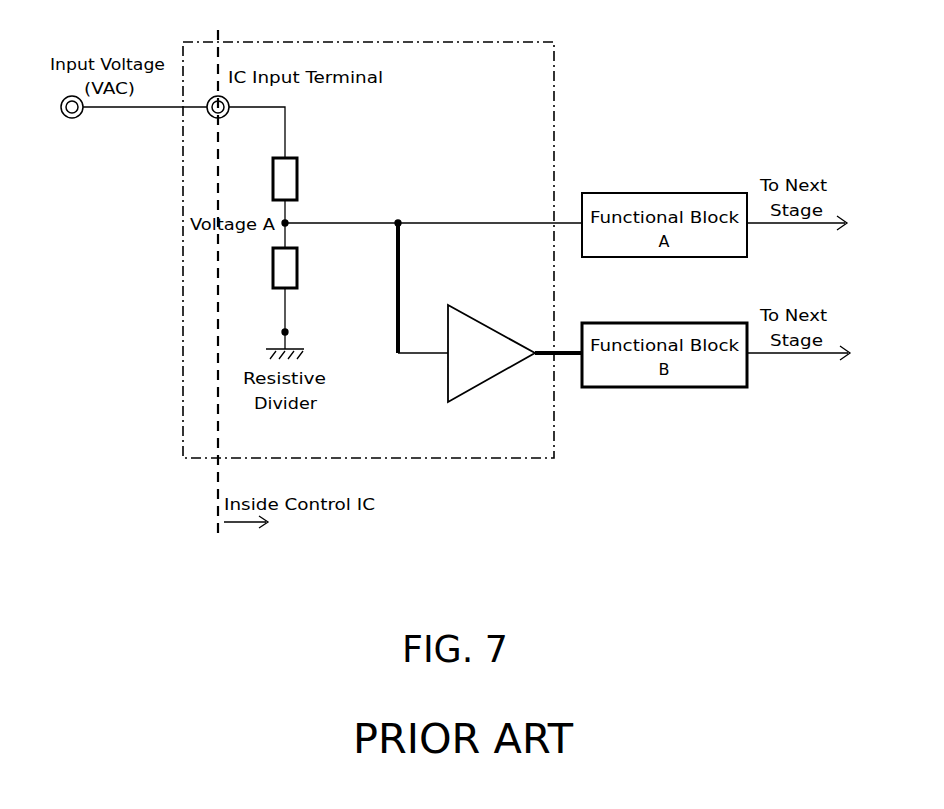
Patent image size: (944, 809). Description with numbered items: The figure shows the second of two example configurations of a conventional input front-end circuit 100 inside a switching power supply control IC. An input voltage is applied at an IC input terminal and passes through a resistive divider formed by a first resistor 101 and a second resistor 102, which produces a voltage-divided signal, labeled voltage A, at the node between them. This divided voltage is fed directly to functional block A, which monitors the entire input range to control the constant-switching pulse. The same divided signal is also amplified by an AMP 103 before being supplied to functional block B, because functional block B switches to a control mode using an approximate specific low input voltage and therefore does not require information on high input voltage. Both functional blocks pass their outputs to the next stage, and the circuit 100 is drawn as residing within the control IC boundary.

The input front-end circuit 100 is at (280, 42).
The resistor R1 101 is at (297, 178).
The resistor R2 102 is at (297, 272).
The AMP 103 is at (490, 378).